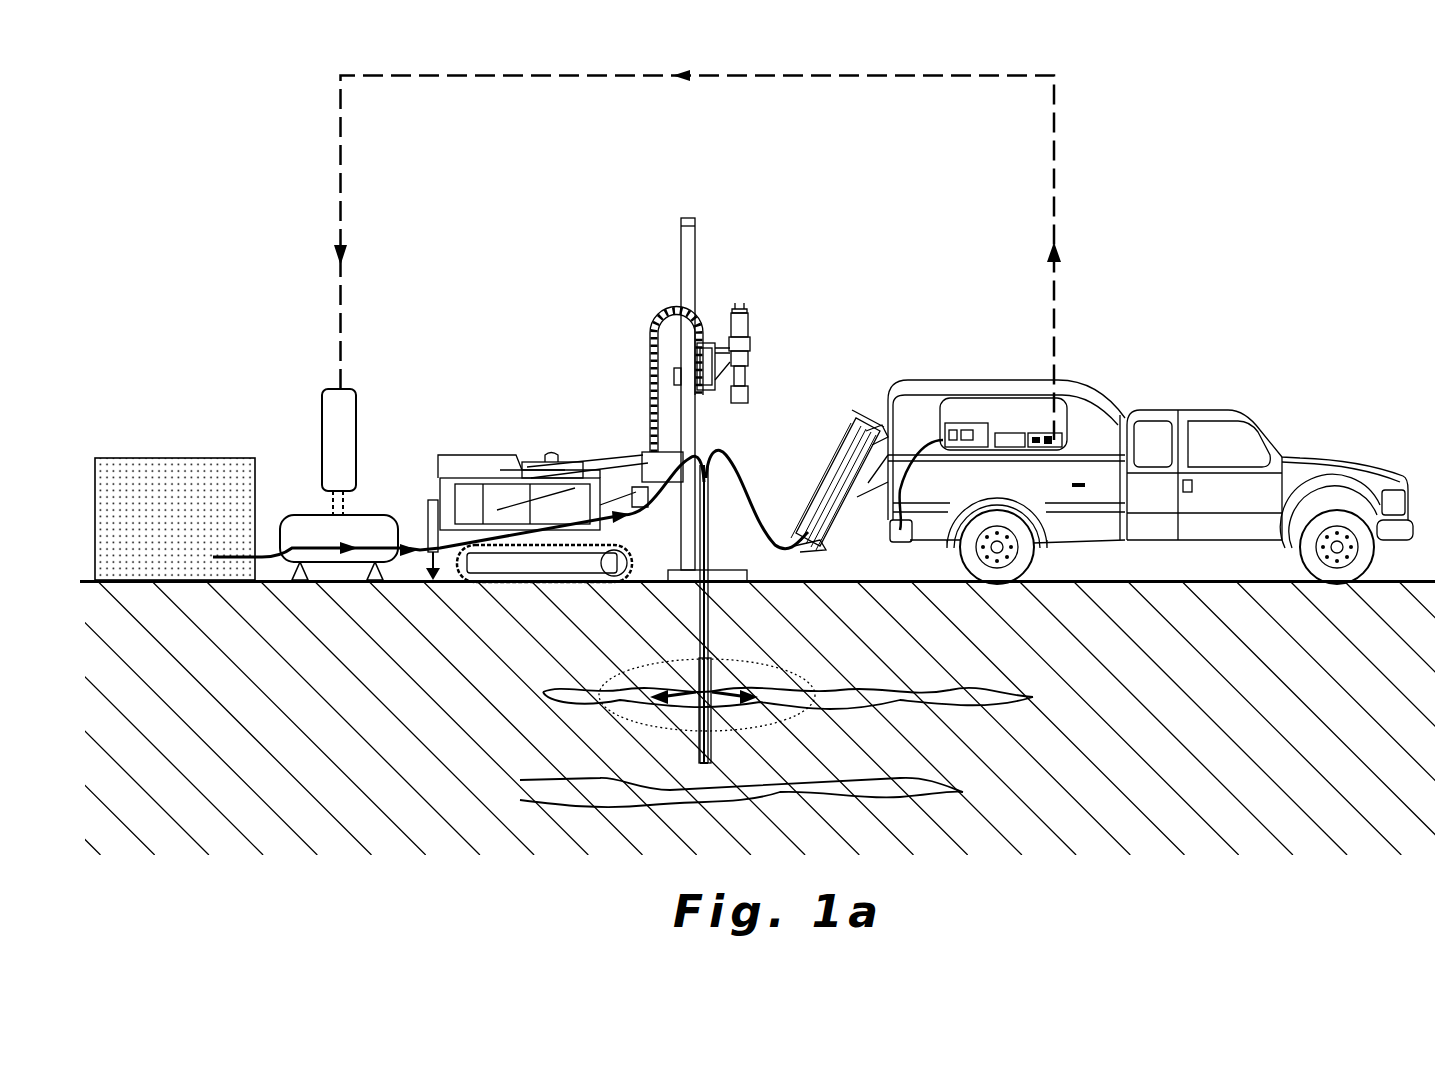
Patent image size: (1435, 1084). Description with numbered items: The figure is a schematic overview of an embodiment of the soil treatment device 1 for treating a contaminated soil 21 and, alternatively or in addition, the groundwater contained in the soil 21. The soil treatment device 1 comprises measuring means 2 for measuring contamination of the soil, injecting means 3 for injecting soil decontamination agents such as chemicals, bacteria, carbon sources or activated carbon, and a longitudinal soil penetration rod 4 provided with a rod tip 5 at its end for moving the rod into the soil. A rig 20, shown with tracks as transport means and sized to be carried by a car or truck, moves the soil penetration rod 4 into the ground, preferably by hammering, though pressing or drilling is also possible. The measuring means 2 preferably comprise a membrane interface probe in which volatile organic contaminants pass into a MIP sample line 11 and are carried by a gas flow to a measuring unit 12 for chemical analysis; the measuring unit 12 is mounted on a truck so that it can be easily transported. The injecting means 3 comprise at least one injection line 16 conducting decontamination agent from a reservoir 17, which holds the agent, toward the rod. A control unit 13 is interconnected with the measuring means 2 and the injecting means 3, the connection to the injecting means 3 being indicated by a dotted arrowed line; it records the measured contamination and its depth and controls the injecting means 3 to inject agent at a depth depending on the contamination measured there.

The soil treatment device 1 is at (1225, 220).
The measuring means 2 is at (957, 415).
The injecting means 3 is at (382, 450).
The soil penetration rod 4 is at (710, 682).
The rod tip 5 is at (707, 763).
The MIP sample line 11 is at (747, 500).
The measuring unit 12 is at (1102, 430).
The control unit 13 is at (1067, 440).
The injection line 16 is at (700, 627).
The reservoir 17 is at (182, 478).
The rig 20 is at (500, 437).
The contaminated soil 21 is at (912, 782).